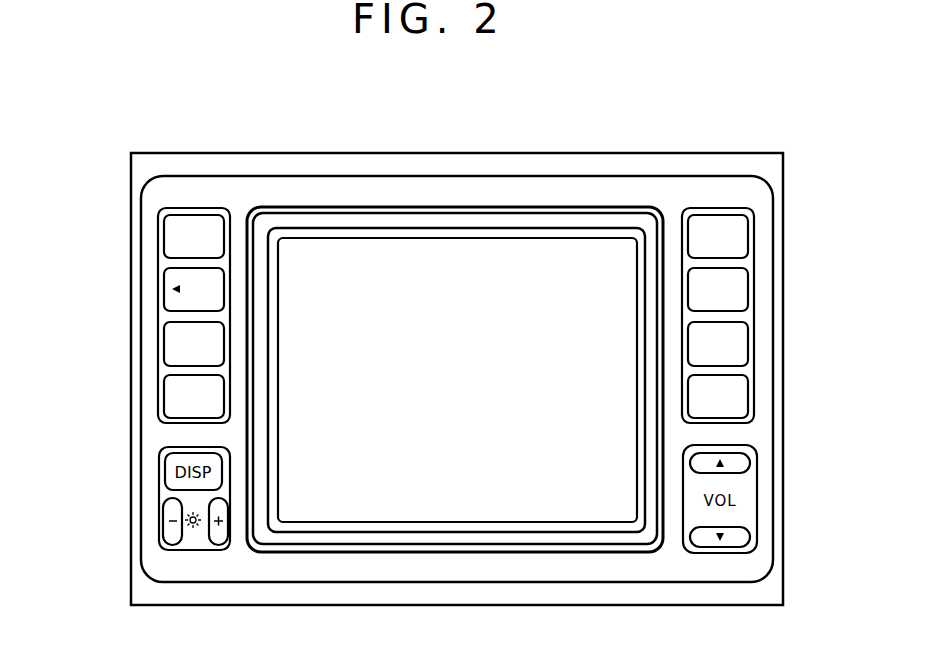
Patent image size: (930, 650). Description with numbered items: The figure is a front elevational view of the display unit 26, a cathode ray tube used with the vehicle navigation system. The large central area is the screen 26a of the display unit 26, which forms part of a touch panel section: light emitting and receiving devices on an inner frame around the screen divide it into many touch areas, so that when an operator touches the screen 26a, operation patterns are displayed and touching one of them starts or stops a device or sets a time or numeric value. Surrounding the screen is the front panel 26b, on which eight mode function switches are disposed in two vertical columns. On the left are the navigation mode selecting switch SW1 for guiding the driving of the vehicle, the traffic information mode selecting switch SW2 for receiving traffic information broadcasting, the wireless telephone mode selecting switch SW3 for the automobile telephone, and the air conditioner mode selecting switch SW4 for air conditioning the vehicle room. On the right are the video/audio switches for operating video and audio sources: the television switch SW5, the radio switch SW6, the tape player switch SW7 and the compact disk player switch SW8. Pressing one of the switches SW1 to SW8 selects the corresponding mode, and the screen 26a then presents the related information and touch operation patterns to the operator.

The display unit 26 is at (182, 153).
The screen 26a is at (585, 252).
The front panel 26b is at (148, 433).
The navigation mode selecting switch SW1 is at (165, 237).
The traffic information mode selecting switch SW2 is at (165, 293).
The wireless telephone mode selecting switch SW3 is at (165, 347).
The air conditioner mode selecting switch SW4 is at (165, 397).
The television switch SW5 is at (748, 224).
The radio switch SW6 is at (748, 280).
The tape player switch SW7 is at (748, 333).
The compact disk player switch SW8 is at (748, 385).